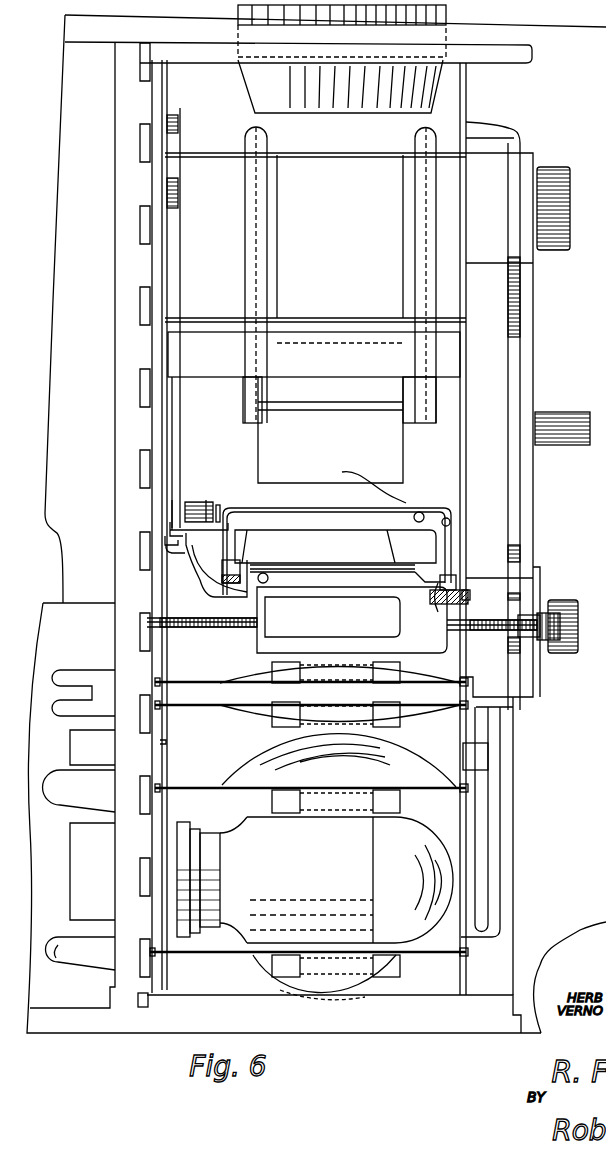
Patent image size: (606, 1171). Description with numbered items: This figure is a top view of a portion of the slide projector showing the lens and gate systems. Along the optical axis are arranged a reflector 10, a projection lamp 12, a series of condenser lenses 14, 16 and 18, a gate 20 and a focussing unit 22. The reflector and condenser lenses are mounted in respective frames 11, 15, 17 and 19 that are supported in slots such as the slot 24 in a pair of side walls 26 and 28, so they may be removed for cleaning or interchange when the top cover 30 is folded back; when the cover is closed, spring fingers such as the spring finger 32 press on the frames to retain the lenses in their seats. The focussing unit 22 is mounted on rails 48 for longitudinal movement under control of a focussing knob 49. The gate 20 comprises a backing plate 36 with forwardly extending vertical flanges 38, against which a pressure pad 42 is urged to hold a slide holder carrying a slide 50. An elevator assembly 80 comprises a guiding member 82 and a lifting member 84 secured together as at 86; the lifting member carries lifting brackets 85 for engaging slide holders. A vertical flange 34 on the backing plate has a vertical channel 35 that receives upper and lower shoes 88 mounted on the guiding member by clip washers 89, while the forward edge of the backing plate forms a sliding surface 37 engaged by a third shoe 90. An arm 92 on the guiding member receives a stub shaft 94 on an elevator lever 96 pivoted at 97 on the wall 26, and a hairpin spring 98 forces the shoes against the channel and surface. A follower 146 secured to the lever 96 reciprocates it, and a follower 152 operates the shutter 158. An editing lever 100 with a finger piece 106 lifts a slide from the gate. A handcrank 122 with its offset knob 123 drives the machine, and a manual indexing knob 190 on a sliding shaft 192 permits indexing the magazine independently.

The reflector 10 is at (400, 958).
The frame 11 is at (222, 954).
The projection lamp 12 is at (417, 877).
The condenser lens 14 is at (416, 786).
The frame 15 is at (188, 782).
The condenser lens 16 is at (416, 714).
The frame 17 is at (189, 690).
The condenser lens 18 is at (418, 676).
The frame 19 is at (184, 682).
The gate 20 is at (355, 555).
The focussing unit 22 is at (355, 260).
The slot 24 is at (168, 783).
The side wall 26 is at (164, 742).
The side wall 28 is at (467, 767).
The top cover 30 is at (80, 643).
The spring finger 32 is at (55, 950).
The vertical flange 34 is at (171, 534).
The vertical channel 35 is at (186, 555).
The backing plate 36 is at (462, 595).
The sliding surface 37 is at (438, 590).
The vertical flange 38 is at (410, 586).
The pressure pad 42 is at (263, 573).
The rail 48 is at (268, 130).
The focussing knob 49 is at (552, 167).
The slide 50 is at (352, 620).
The elevator assembly 80 is at (411, 497).
The guiding member 82 is at (447, 518).
The lifting member 84 is at (421, 515).
The lifting bracket 85 is at (225, 585).
The rivet connection 86 is at (342, 472).
The shoe 88 is at (182, 545).
The clip washer 89 is at (195, 505).
The shoe 90 is at (453, 582).
The arm 92 is at (190, 502).
The stub shaft 94 is at (206, 508).
The elevator lever 96 is at (182, 415).
The pivot 97 is at (178, 115).
The hairpin spring 98 is at (218, 520).
The lever 100 is at (230, 620).
The finger piece 106 is at (545, 615).
The handcrank 122 is at (527, 322).
The offset knob 123 is at (548, 412).
The follower 146 is at (178, 190).
The follower 152 is at (178, 318).
The shutter 158 is at (338, 438).
The manual indexing knob 190 is at (563, 653).
The shaft 192 is at (437, 636).